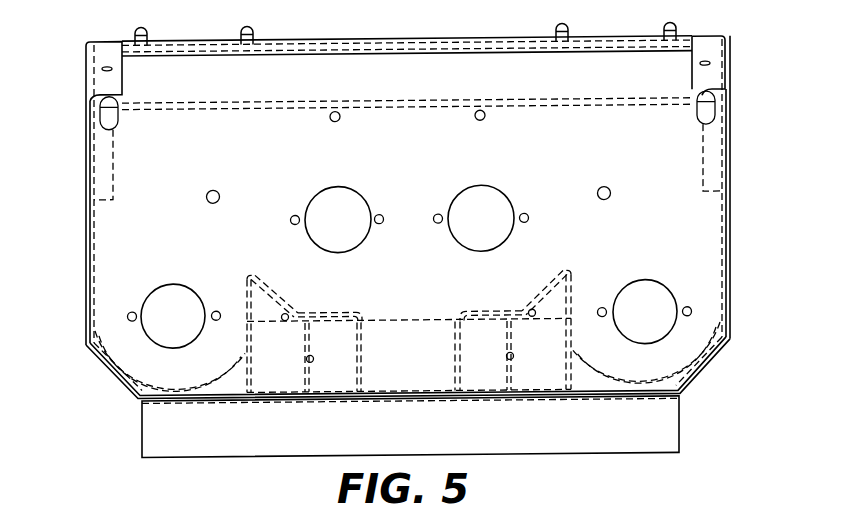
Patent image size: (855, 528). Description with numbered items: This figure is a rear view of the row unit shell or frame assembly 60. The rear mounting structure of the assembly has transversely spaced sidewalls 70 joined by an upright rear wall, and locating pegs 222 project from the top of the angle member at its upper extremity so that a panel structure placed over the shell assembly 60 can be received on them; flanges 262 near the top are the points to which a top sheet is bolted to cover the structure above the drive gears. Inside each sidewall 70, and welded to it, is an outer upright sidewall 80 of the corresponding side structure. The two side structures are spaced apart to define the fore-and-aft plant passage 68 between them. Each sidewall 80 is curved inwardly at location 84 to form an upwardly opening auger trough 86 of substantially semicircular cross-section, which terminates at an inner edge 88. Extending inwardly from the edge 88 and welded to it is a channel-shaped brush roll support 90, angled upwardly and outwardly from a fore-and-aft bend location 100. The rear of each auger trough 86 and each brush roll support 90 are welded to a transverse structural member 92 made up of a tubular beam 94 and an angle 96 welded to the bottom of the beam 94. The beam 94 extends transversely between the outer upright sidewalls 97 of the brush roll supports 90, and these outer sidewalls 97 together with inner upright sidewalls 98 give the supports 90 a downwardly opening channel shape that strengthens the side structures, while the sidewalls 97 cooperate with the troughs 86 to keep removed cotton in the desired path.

The row unit shell or frame assembly 60 is at (705, 420).
The plant passage 68 is at (401, 339).
The sidewalls 70 is at (86, 205).
The outer upright sidewalls 80 is at (95, 223).
The curved location 84 is at (95, 320).
The auger trough 86 is at (165, 388).
The inner edge 88 is at (248, 349).
The brush roll support 90 is at (317, 305).
The transverse structural member 92 is at (118, 408).
The angle 96 is at (142, 441).
The tubular beam 94 is at (423, 320).
The outer upright sidewalls 97 is at (252, 374).
The inner upright sidewalls 98 is at (458, 367).
The bend location 100 is at (300, 312).
The locating pegs 222 is at (247, 27).
The flanges 262 is at (122, 76).